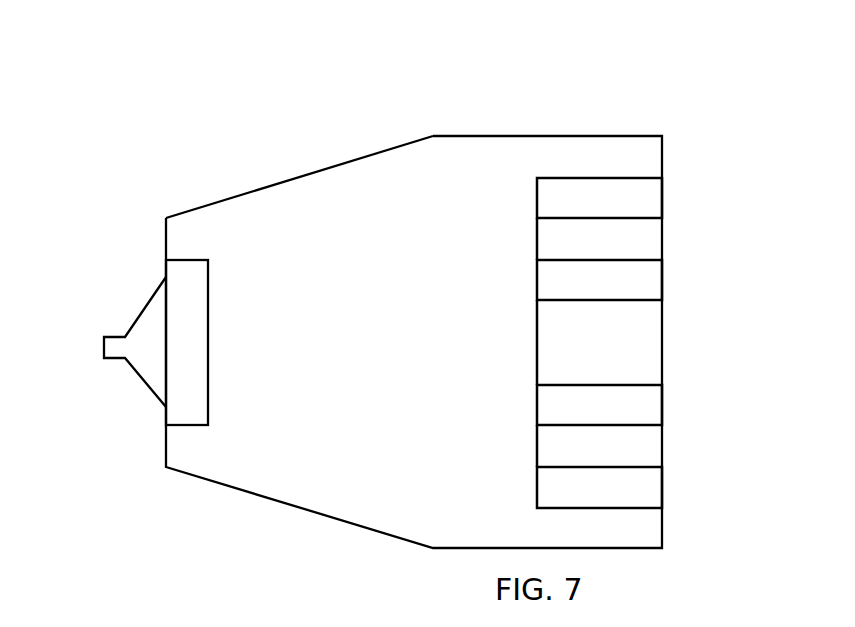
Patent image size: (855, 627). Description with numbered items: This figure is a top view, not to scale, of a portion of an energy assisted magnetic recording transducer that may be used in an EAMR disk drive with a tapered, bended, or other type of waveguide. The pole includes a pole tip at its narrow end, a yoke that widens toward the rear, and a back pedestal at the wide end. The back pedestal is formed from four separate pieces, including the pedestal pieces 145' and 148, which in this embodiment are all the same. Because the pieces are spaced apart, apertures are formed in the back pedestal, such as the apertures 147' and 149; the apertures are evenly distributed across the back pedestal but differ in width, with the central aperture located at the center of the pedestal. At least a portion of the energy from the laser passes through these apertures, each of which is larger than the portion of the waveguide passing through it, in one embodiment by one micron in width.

The back pedestal piece 145' is at (636, 390).
The aperture 147' is at (669, 426).
The back pedestal piece 148 is at (662, 289).
The aperture 149 is at (667, 243).